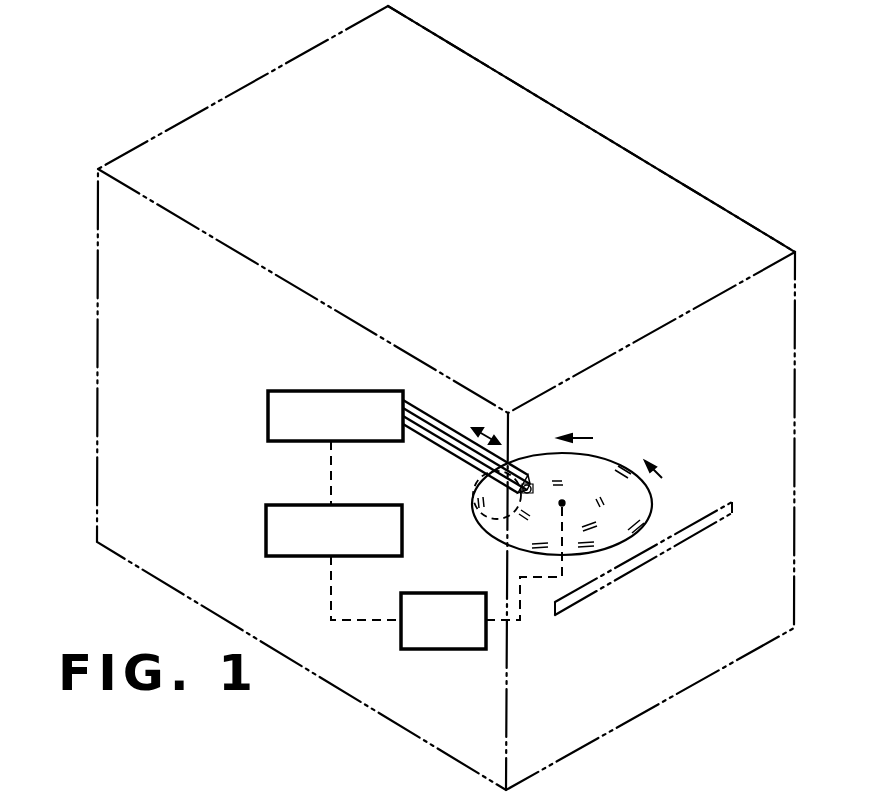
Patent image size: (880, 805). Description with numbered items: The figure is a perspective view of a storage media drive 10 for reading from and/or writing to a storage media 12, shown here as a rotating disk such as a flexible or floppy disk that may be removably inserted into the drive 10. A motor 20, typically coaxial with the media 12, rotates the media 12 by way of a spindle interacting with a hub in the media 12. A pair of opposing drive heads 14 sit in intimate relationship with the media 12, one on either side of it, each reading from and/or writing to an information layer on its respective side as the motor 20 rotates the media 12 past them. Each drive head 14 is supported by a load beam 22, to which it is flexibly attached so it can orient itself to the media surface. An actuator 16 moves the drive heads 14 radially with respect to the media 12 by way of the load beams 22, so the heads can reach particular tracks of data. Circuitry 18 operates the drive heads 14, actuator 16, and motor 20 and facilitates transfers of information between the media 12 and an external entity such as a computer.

The storage media drive 10 is at (759, 623).
The storage media 12 is at (633, 521).
The drive heads 14 is at (531, 487).
The actuator 16 is at (273, 417).
The circuitry 18 is at (277, 514).
The motor 20 is at (453, 603).
The load beam 22 is at (441, 428).